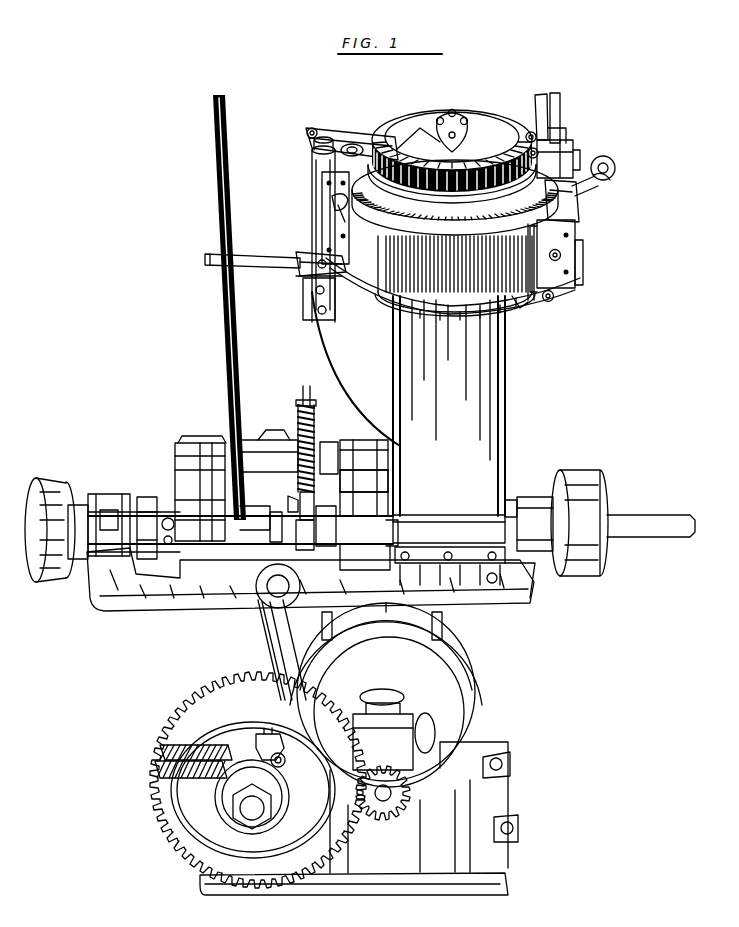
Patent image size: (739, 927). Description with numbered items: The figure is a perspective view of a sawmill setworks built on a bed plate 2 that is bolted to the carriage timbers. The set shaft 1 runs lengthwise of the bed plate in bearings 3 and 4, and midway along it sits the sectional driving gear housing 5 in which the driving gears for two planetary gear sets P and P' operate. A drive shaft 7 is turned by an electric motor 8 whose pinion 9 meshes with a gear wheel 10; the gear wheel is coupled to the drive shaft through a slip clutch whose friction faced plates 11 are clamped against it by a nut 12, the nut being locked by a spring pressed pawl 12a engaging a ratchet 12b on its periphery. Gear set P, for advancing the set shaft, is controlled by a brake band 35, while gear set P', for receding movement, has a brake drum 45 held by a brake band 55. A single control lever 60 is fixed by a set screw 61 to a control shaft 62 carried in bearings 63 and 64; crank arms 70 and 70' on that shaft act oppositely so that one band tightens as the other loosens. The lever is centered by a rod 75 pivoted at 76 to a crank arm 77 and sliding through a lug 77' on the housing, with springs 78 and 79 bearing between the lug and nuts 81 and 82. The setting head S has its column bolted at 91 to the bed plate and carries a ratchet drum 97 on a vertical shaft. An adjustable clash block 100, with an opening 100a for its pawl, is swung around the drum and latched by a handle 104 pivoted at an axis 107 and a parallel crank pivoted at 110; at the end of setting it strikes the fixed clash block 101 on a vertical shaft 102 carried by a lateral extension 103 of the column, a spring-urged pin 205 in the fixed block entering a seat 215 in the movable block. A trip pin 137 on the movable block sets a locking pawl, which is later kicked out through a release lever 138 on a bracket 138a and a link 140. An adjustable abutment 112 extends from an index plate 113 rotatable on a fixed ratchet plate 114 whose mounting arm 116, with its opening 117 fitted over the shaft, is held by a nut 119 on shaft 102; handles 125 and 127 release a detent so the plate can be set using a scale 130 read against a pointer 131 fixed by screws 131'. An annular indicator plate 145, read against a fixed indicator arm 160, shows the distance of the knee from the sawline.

The set shaft 1 is at (660, 520).
The bed plate 2 is at (152, 598).
The bearing 3 is at (533, 500).
The bearing 4 is at (116, 492).
The driving gear housing 5 is at (248, 446).
The drive shaft 7 is at (268, 632).
The electric motor 8 is at (450, 694).
The pinion 9 is at (418, 776).
The gear wheel 10 is at (170, 836).
The friction faced plates 11 is at (200, 746).
The nut 12 is at (283, 766).
The spring pressed pawl 12a is at (264, 750).
The ratchet 12b is at (282, 776).
The brake band 35 is at (388, 482).
The brake drum 45 is at (186, 462).
The brake band 55 is at (210, 438).
The control lever 60 is at (228, 320).
The set screw 61 is at (272, 514).
The control shaft 62 is at (284, 520).
The bearing 63 is at (147, 497).
The bearing 64 is at (456, 520).
The crank arms 70 is at (402, 517).
The crank arms 70' is at (181, 511).
The rod 75 is at (308, 400).
The pivot connection 76 is at (320, 520).
The crank arm 77 is at (296, 522).
The lug 77' is at (329, 459).
The spring 78 is at (316, 403).
The spring 79 is at (336, 444).
The adjustable abutment nut 81 is at (306, 392).
The adjustable abutment nut 82 is at (288, 498).
The bolts 91 is at (495, 584).
The ratchet drum 97 is at (462, 310).
The adjustable clash block 100 is at (516, 300).
The opening 100a is at (576, 250).
The fixed clash block 101 is at (322, 202).
The vertical shaft 102 is at (318, 152).
The lateral extension 103 is at (310, 300).
The handle 104 is at (596, 190).
The axis 107 is at (580, 222).
The pivot 110 is at (580, 280).
The adjustable abutment 112 is at (573, 160).
The index plate 113 is at (531, 132).
The fixed ratchet plate 114 is at (398, 148).
The mounting arm 116 is at (336, 136).
The hole 117 is at (356, 145).
The nut 119 is at (314, 128).
The fixed handle 125 is at (560, 126).
The pivoted handle 127 is at (546, 100).
The scale 130 is at (480, 132).
The pointer 131 is at (473, 112).
The screws 131' is at (477, 79).
The trip pin 137 is at (554, 298).
The release lever 138 is at (250, 257).
The bracket 138a is at (318, 306).
The link 140 is at (312, 258).
The annular indicator plate 145 is at (382, 290).
The fixed indicator arm 160 is at (450, 118).
The projection or pin 205 is at (328, 206).
The seat or recess 215 is at (562, 256).
The planetary gear set P is at (381, 496).
The planetary gear set P' is at (200, 476).
The setting head S is at (506, 372).